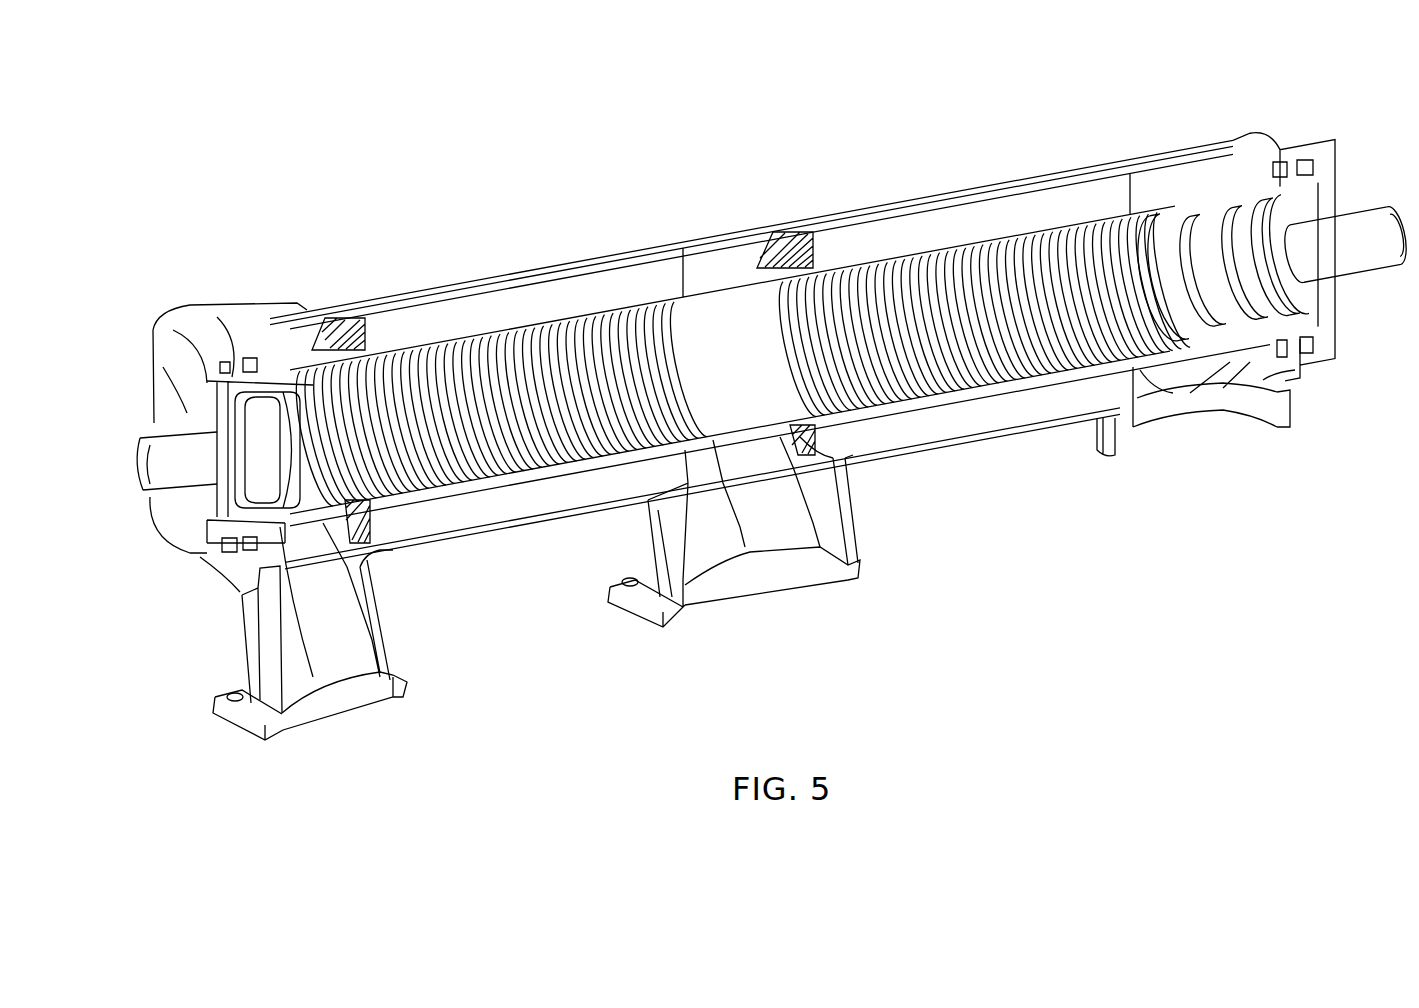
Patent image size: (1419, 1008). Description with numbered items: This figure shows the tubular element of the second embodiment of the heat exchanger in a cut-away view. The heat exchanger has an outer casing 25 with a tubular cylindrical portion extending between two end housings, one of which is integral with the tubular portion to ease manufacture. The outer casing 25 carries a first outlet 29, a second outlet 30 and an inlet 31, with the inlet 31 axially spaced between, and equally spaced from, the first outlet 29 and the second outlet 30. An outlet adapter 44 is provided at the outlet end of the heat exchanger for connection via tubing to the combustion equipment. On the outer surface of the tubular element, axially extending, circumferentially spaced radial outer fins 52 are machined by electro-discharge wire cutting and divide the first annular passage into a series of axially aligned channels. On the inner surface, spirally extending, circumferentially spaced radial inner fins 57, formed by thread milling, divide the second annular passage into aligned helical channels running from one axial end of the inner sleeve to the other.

The outer casing 25 is at (568, 268).
The first outlet 29 is at (1287, 407).
The second outlet 30 is at (262, 642).
The inlet 31 is at (843, 518).
The outlet adapter 44 is at (157, 447).
The outer fins 52 is at (793, 240).
The inner fins 57 is at (967, 277).